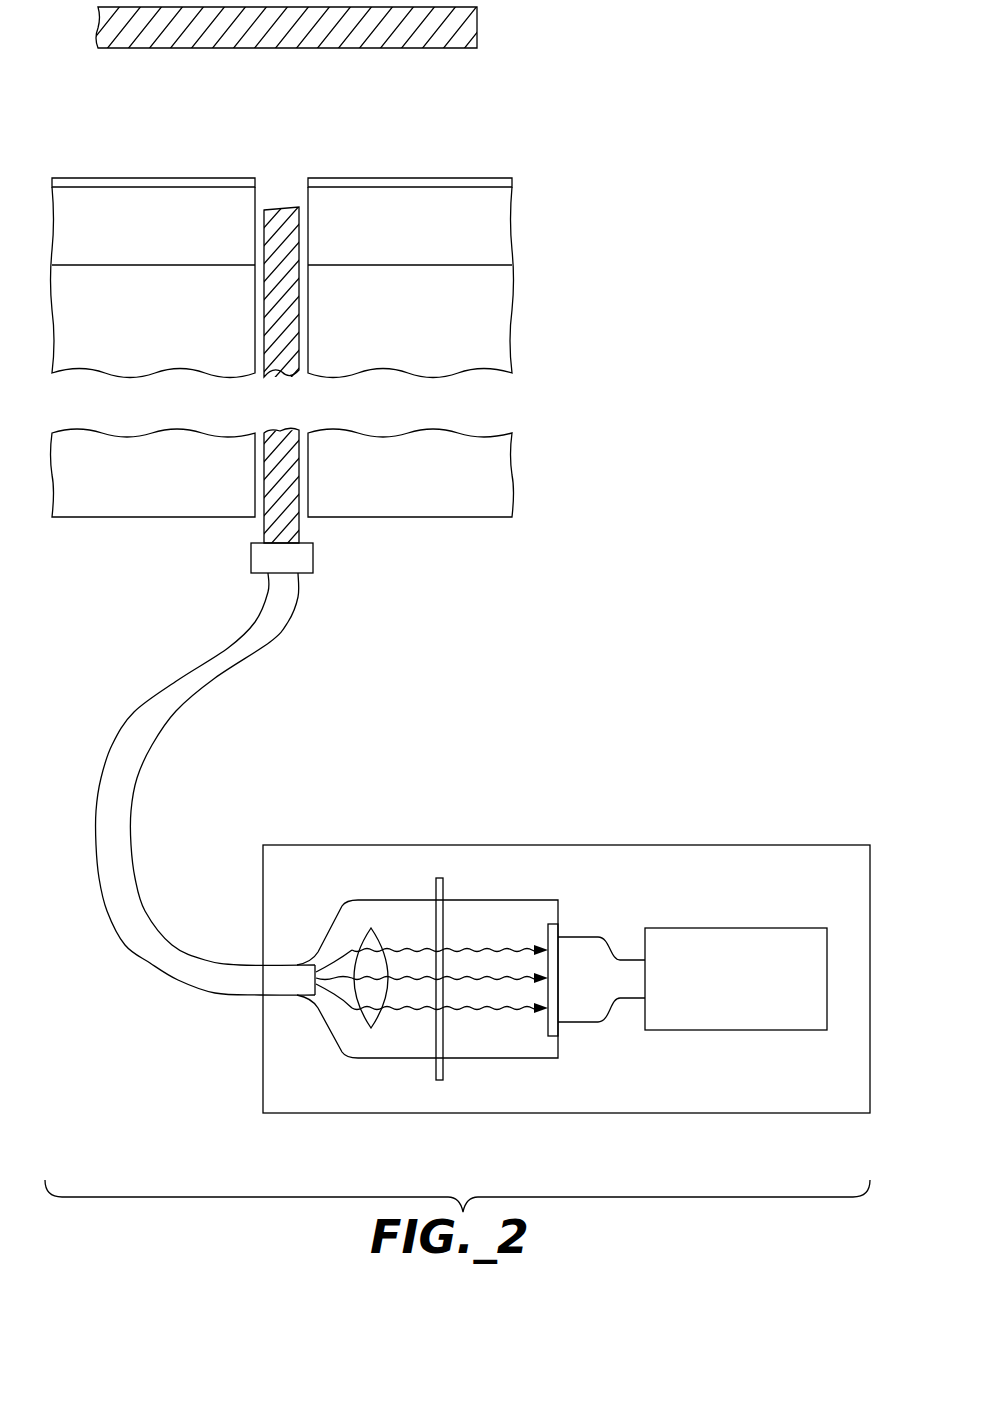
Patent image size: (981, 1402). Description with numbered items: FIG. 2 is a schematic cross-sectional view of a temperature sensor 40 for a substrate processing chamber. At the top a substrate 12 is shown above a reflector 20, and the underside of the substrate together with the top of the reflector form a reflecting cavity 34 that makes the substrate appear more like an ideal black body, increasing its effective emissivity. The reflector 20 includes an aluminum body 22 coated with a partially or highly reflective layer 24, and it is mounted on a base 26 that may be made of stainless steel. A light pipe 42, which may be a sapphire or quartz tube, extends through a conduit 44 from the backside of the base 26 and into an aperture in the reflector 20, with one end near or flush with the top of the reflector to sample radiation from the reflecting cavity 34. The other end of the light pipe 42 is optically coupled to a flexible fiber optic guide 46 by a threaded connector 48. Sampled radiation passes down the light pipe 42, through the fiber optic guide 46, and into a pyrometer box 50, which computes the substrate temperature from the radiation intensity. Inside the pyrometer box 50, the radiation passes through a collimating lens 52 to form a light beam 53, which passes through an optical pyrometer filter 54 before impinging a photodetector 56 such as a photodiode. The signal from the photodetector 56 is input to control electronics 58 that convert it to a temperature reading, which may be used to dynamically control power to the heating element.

The wafer 12 is at (465, 25).
The reflecting cavity 34 is at (298, 123).
The reflector 20 is at (340, 258).
The aluminum body 22 is at (502, 222).
The reflective layer 24 is at (458, 178).
The base 26 is at (500, 482).
The pyrometer system 40 is at (192, 1076).
The light pipe 42 is at (270, 528).
The conduit 44 is at (310, 477).
The fiber optic guide 46 is at (137, 922).
The threaded connector 48 is at (317, 560).
The pyrometer box 50 is at (338, 843).
The collimating lens 52 is at (363, 933).
The light beam 53 is at (413, 1010).
The optical pyrometer filter 54 is at (444, 892).
The photodetector 56 is at (562, 930).
The control electronics 58 is at (702, 927).